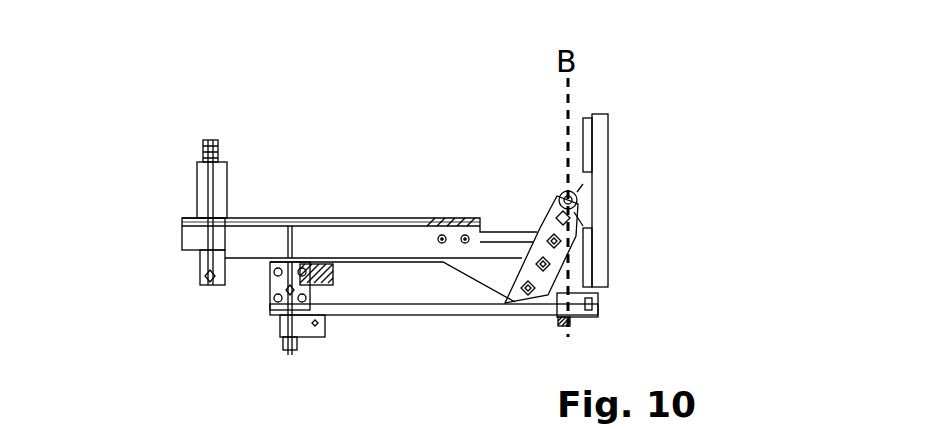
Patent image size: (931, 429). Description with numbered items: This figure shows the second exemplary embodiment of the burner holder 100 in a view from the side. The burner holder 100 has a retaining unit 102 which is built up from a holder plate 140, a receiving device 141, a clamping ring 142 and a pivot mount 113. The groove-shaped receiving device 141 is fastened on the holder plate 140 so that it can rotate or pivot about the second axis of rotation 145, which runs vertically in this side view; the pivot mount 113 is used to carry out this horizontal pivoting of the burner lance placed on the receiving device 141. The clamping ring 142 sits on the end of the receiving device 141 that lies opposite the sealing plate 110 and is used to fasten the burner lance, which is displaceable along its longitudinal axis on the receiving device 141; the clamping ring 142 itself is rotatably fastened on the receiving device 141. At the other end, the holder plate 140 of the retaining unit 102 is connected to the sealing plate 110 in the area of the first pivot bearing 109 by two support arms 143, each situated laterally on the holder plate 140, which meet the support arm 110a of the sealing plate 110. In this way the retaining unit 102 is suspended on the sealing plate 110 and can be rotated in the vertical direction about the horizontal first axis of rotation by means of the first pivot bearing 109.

The burner holder 100 is at (281, 127).
The retaining unit 102 is at (169, 199).
The pivot bearing 109 is at (575, 197).
The sealing plate 110 is at (610, 142).
The support arm 110a is at (553, 210).
The pivot mount 113 is at (272, 291).
The holder plate 140 is at (367, 315).
The receiving device 141 is at (382, 233).
The clamping ring 142 is at (225, 183).
The support arm 143 is at (527, 270).
The second axis of rotation 145 is at (578, 320).